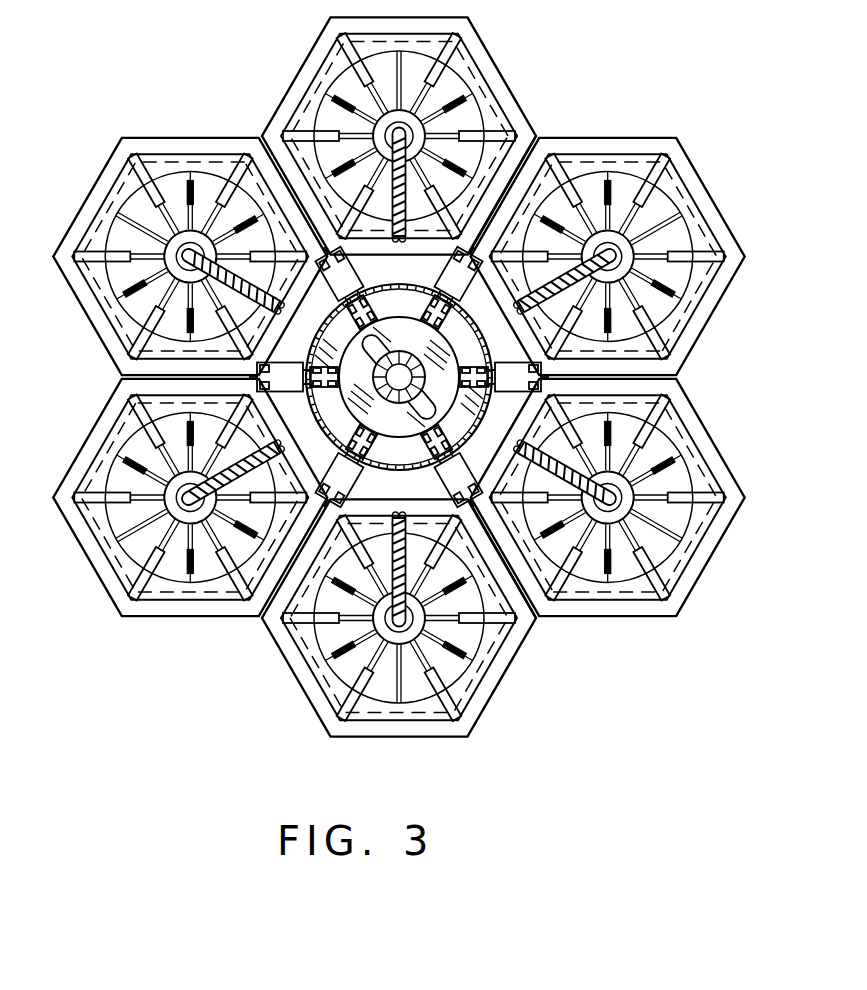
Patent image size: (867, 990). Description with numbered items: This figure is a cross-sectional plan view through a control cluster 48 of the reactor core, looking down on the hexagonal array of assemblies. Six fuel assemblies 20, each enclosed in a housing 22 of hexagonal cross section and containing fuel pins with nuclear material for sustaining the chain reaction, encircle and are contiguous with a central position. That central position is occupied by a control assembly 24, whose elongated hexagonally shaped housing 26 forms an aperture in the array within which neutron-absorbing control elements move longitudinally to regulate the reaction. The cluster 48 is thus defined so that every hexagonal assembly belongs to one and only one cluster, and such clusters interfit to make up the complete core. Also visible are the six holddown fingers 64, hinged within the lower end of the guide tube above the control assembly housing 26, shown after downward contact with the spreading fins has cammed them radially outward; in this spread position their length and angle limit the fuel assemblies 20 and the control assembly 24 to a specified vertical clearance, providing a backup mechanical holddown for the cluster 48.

The fuel assembly 20 is at (697, 161).
The housing 22 is at (717, 313).
The control assembly 24 is at (275, 318).
The control assembly housing 26 is at (312, 432).
The cluster 48 is at (393, 376).
The holddown finger 64 is at (538, 132).